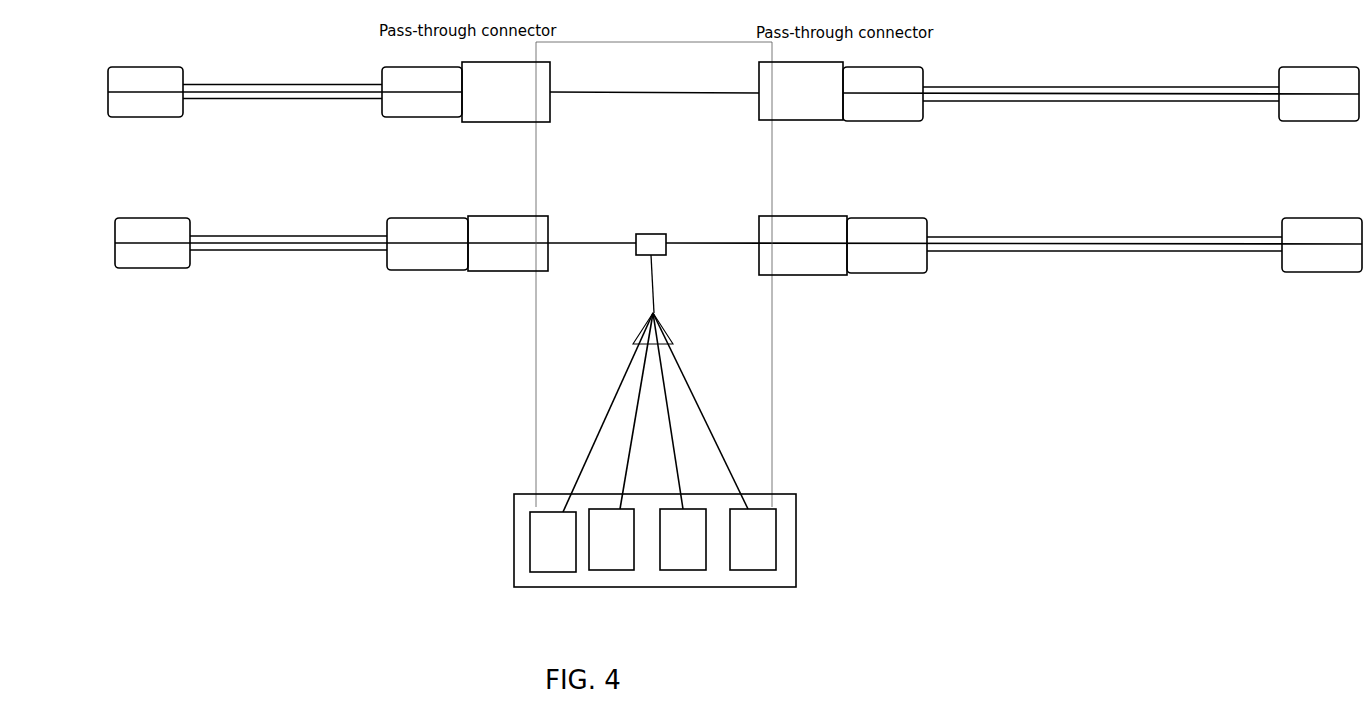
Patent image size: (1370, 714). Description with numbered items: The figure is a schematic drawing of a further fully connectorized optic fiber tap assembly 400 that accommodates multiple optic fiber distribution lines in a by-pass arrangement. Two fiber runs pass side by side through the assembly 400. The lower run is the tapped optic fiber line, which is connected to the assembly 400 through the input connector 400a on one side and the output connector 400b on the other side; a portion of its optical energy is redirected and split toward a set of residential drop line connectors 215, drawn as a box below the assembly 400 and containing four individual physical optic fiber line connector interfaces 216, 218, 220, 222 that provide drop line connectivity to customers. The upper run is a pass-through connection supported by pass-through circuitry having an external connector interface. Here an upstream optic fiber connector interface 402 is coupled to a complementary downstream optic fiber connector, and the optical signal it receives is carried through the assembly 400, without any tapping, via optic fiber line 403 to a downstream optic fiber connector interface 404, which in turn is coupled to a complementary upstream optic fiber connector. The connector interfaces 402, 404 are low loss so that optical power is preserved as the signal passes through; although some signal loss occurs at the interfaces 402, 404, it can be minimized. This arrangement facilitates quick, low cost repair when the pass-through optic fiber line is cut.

The fully connectorized optic fiber tap assembly 400 is at (654, 274).
The input connector 400a is at (508, 243).
The output connector 400b is at (803, 245).
The upstream optic fiber connector interface 402 is at (506, 92).
The optic fiber line 403 is at (610, 92).
The downstream optic fiber connector interface 404 is at (801, 91).
The set of residential drop line connectors 215 is at (514, 540).
The physical optic fiber line connector interface 216 is at (553, 542).
The physical optic fiber line connector interface 218 is at (611, 539).
The physical optic fiber line connector interface 220 is at (683, 539).
The physical optic fiber line connector interface 222 is at (753, 539).